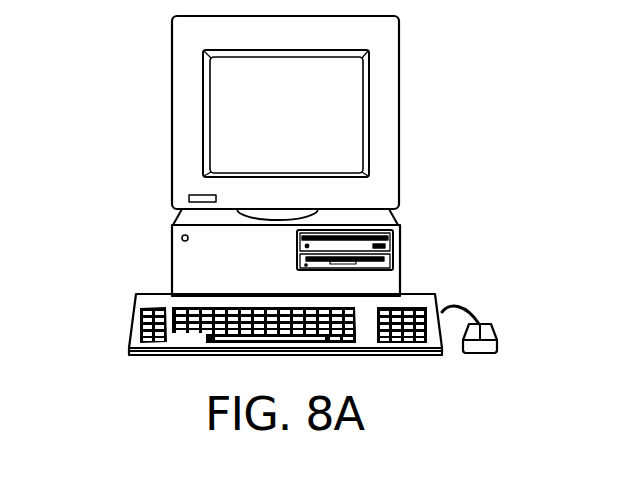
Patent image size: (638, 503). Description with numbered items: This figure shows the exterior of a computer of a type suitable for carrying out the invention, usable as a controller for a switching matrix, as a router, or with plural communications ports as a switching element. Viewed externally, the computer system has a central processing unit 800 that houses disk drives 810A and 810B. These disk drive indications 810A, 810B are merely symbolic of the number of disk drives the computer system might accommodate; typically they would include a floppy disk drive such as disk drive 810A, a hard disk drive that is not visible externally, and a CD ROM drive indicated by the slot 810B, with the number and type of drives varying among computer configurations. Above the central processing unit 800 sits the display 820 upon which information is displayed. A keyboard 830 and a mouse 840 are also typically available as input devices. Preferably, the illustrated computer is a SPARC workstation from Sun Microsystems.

The central processing unit 800 is at (172, 232).
The disk drive 810A is at (393, 237).
The disk drive 810B is at (393, 264).
The display 820 is at (399, 84).
The keyboard 830 is at (132, 322).
The mouse 840 is at (498, 338).